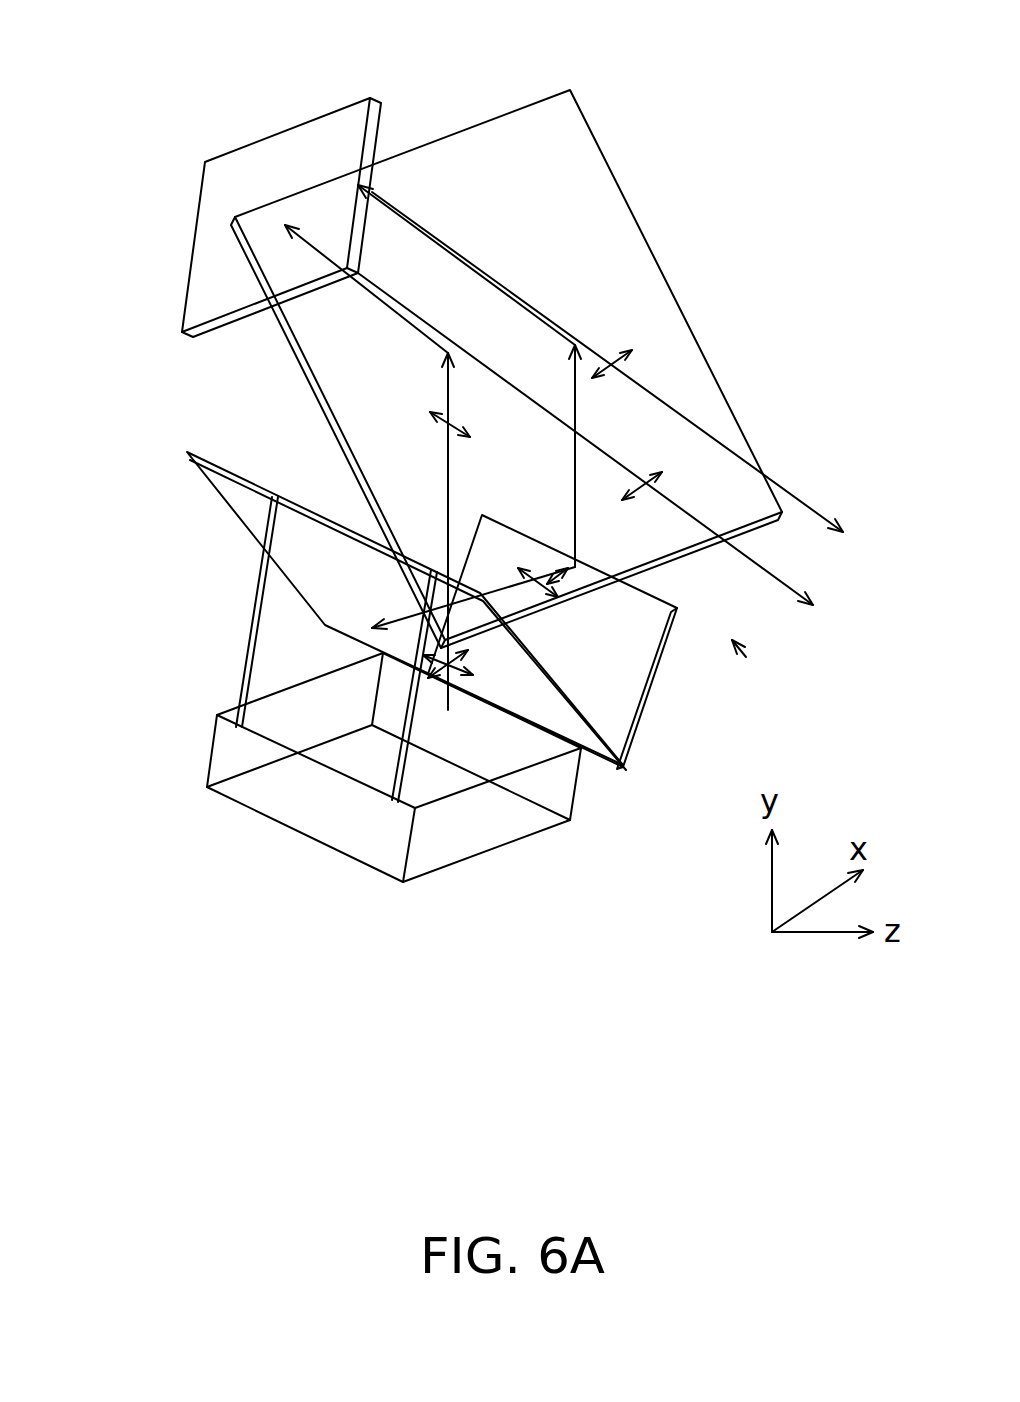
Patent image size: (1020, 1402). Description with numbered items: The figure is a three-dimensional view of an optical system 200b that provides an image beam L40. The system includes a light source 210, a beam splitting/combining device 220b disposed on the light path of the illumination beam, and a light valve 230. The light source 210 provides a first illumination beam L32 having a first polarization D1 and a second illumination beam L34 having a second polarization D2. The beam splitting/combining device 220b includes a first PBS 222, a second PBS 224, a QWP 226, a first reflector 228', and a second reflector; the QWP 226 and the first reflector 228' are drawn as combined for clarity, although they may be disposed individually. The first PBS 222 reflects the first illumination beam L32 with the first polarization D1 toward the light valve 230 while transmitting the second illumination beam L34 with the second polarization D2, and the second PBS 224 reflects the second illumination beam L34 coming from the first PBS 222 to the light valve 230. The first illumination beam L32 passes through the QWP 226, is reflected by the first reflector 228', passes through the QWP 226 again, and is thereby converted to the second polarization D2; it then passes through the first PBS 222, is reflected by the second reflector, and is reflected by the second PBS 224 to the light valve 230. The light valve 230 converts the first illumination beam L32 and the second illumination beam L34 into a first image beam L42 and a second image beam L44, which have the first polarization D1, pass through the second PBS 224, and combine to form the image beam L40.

The optical system 200b is at (883, 1220).
The light source 210 is at (442, 843).
The beam splitting/combining device 220b is at (683, 180).
The first polarizing beam splitter 222 is at (242, 525).
The second polarizing beam splitter 224 is at (513, 135).
The quarter wave plate 226 is at (275, 638).
The first reflector 228' is at (414, 686).
The light valve 230 is at (205, 182).
The first illumination beam L32 is at (576, 402).
The second illumination beam L34 is at (448, 392).
The image beam L40 is at (746, 657).
The first image beam L42 is at (703, 418).
The second image beam L44 is at (758, 563).
The first polarization D1 is at (473, 655).
The second polarization D2 is at (440, 410).